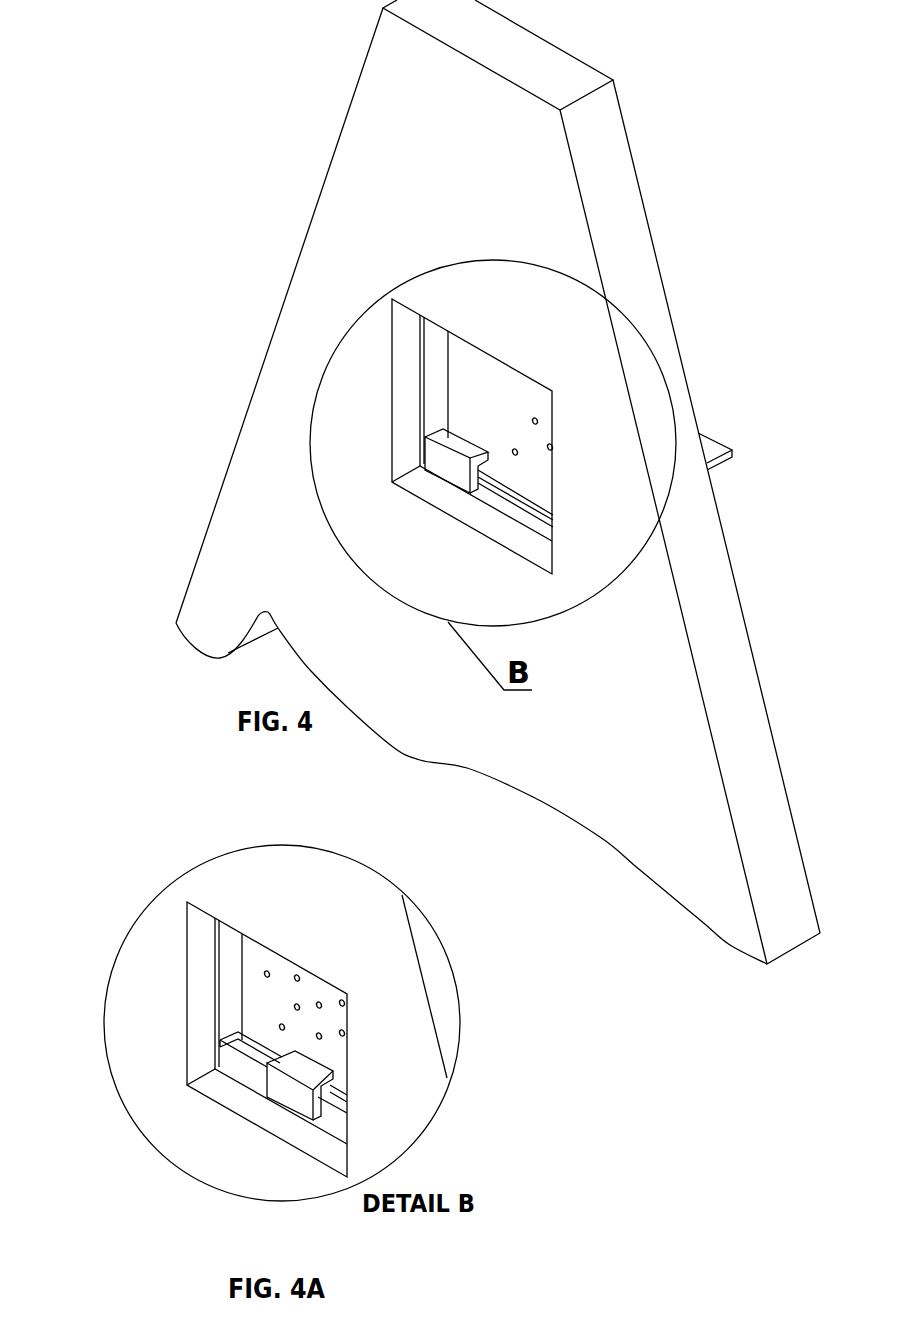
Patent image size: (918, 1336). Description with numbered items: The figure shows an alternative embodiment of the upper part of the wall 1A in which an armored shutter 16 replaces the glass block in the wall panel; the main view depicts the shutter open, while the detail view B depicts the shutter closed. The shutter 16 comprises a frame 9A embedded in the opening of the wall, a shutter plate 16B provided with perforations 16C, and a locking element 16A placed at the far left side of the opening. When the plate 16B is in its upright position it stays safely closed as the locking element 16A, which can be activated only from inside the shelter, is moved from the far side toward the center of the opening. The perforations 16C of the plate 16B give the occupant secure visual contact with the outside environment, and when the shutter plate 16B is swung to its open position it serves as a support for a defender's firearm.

In FIG. 4, the support leg / panel of A-frame structure 1A is at (630, 429).
In FIG. 4A, the support leg / panel of A-frame structure 1A is at (400, 1051).
In FIG. 4, the frame 9A is at (427, 486).
In FIG. 4A, the frame 9A is at (258, 1108).
In FIG. 4, the armored shutter 16 is at (432, 387).
In FIG. 4A, the armored shutter 16 is at (233, 959).
In FIG. 4, the locking element 16A is at (447, 463).
In FIG. 4A, the locking element 16A is at (288, 1092).
In FIG. 4, the shutter plate 16B is at (502, 438).
In FIG. 4A, the shutter plate 16B is at (270, 1006).
In FIG. 4, the perforations 16C is at (535, 421).
In FIG. 4A, the perforations 16C is at (267, 974).